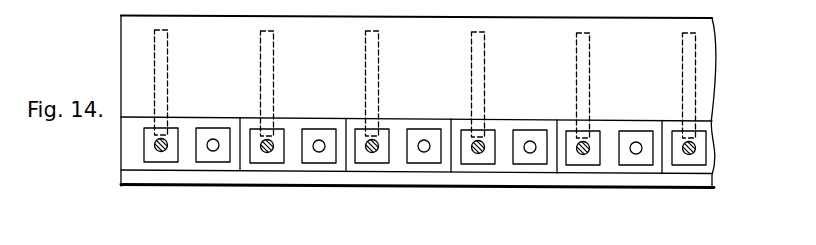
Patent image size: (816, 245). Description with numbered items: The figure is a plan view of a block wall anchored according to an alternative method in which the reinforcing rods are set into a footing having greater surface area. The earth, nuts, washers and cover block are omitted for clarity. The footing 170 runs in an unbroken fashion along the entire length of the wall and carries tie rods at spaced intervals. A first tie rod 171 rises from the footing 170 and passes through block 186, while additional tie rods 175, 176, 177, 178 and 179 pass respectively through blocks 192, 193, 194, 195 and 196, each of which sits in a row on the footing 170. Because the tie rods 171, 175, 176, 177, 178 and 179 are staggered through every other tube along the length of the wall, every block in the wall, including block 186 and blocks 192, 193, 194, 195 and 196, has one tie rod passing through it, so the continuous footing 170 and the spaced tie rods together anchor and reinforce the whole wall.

The footing 170 is at (121, 44).
The tie rod 171 is at (168, 52).
The tie rod 175 is at (260, 82).
The tie rod 176 is at (365, 82).
The tie rod 177 is at (472, 82).
The tie rod 178 is at (577, 82).
The tie rod 179 is at (683, 82).
The block 186 is at (132, 150).
The block 192 is at (263, 164).
The block 193 is at (375, 167).
The block 194 is at (482, 167).
The block 195 is at (586, 168).
The block 196 is at (693, 167).